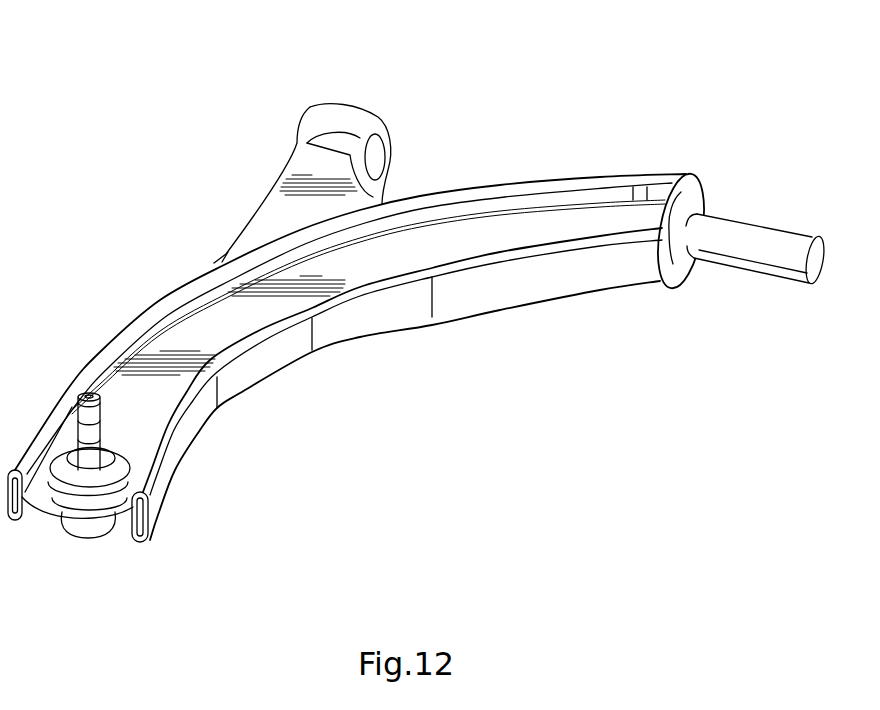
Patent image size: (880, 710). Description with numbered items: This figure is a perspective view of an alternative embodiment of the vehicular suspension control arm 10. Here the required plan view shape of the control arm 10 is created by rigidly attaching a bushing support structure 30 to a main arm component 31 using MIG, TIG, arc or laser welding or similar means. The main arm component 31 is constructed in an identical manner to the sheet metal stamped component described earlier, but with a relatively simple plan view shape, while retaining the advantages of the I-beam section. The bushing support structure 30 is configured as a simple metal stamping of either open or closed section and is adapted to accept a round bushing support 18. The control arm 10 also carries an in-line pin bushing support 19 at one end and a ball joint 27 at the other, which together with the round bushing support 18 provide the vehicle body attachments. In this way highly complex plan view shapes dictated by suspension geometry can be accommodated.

The suspension control arm 10 is at (417, 318).
The round bushing support 18 is at (363, 124).
The in-line pin bushing support 19 is at (750, 236).
The ball joint 27 is at (62, 392).
The bushing support structure 30 is at (292, 203).
The main arm component 31 is at (408, 302).